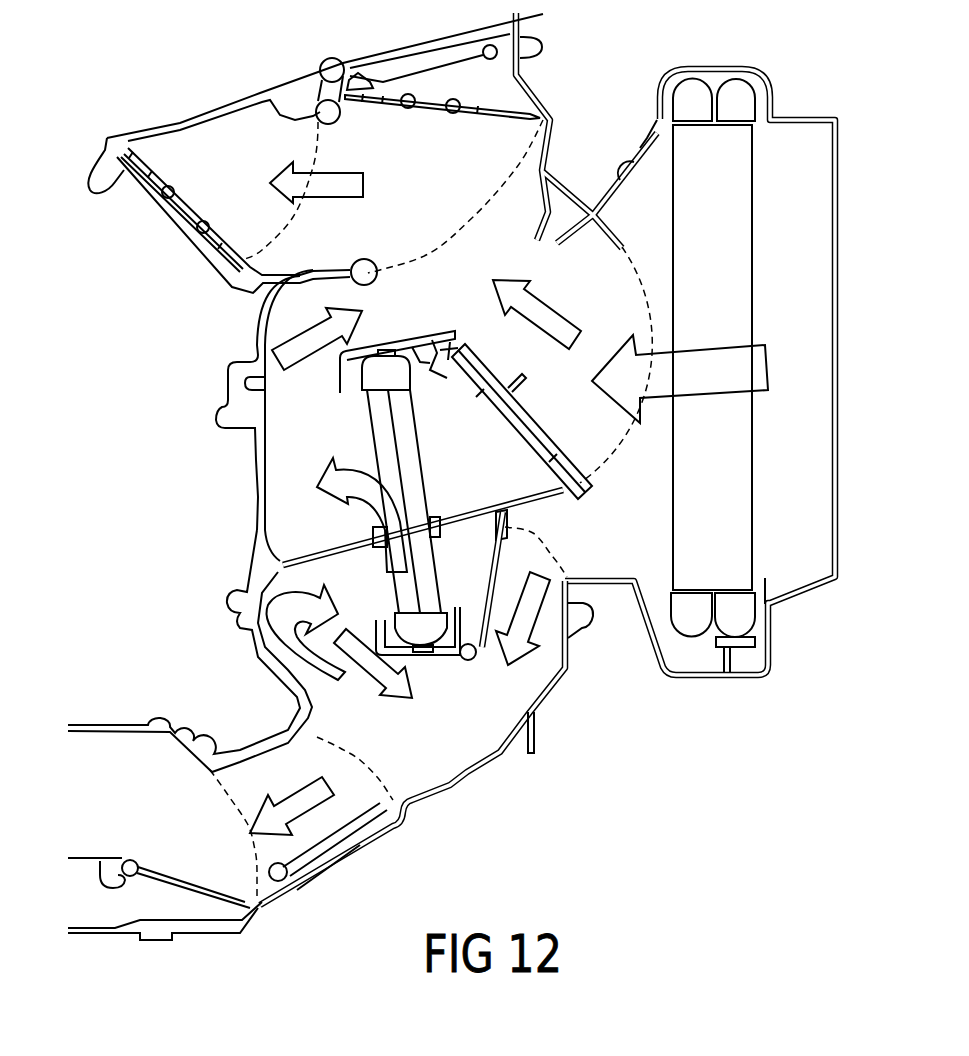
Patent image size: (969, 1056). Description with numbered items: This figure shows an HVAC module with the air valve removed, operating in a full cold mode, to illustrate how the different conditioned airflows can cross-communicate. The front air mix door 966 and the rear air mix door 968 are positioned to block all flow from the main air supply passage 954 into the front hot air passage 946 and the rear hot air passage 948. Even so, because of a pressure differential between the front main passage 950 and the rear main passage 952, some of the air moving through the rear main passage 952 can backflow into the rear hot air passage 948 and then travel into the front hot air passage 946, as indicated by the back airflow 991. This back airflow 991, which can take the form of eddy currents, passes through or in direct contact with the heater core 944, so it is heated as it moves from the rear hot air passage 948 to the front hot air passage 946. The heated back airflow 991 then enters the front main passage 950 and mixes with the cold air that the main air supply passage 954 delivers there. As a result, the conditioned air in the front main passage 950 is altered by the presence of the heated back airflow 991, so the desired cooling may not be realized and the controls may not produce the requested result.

The heater core 944 is at (381, 437).
The front hot air passage 946 is at (452, 413).
The rear hot air passage 948 is at (465, 547).
The front main passage 950 is at (425, 153).
The rear main passage 952 is at (478, 735).
The main air supply passage 954 is at (652, 186).
The front air mix door 966 is at (533, 410).
The rear air mix door 968 is at (497, 568).
The back airflow 991 is at (257, 522).